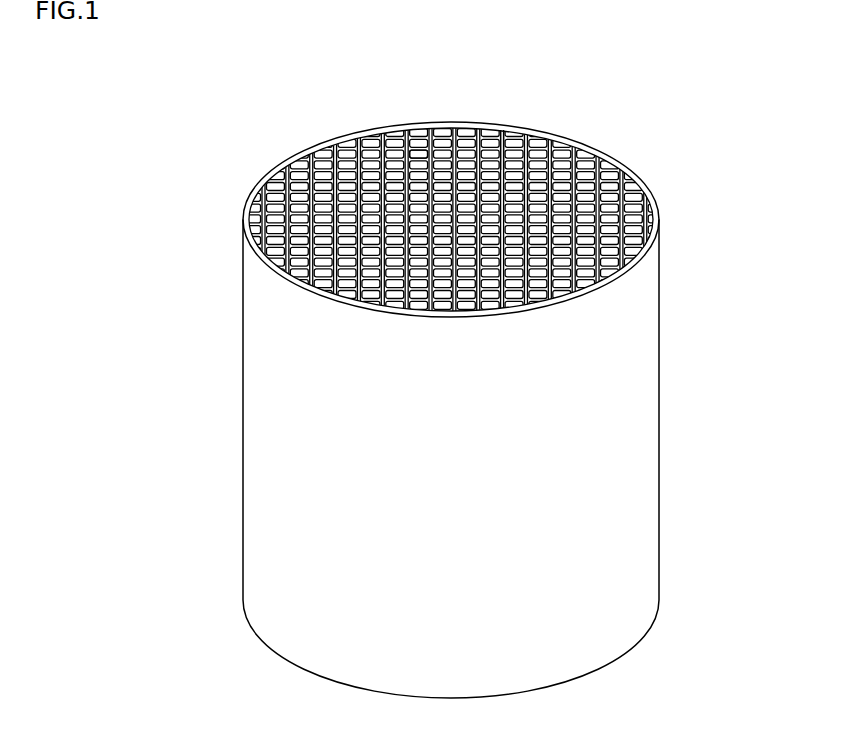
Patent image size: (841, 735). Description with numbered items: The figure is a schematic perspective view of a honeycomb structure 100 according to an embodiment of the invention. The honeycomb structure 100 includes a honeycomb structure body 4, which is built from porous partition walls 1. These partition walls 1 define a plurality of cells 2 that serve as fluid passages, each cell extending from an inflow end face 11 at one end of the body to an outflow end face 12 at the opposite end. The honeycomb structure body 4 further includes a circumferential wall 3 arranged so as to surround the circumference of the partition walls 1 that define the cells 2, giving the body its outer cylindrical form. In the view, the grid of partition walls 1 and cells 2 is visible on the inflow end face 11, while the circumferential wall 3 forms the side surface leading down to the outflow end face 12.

The honeycomb structure 100 is at (731, 63).
The partition wall 1 is at (500, 140).
The cell 2 is at (413, 157).
The circumferential wall 3 is at (636, 292).
The honeycomb structure body 4 is at (663, 403).
The inflow end face 11 is at (258, 180).
The outflow end face 12 is at (256, 642).